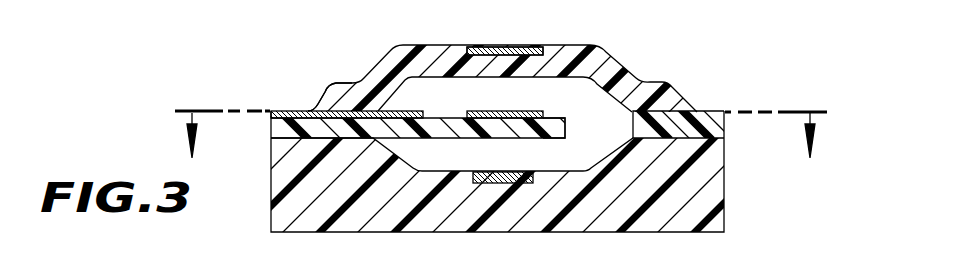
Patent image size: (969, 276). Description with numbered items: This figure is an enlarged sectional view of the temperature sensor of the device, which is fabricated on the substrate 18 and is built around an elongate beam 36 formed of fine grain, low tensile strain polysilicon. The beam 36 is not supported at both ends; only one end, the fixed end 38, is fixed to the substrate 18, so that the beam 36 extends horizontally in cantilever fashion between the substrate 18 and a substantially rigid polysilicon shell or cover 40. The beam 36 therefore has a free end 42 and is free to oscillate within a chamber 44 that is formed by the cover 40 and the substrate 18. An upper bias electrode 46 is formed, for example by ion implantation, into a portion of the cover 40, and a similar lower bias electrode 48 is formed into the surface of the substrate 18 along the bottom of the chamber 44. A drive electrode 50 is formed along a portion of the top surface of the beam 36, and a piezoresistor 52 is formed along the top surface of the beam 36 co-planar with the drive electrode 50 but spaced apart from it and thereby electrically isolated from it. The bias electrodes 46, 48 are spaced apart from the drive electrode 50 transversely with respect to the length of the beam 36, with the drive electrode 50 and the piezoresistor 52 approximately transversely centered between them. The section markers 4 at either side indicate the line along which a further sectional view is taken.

The section line 4- 4 is at (501, 111).
The substrate 18 is at (683, 222).
The elongate beam 36 is at (522, 133).
The fixed end of beam 38 is at (340, 127).
The shell or cover 40 is at (617, 68).
The free end 42 is at (555, 127).
The chamber 44 is at (432, 90).
The upper bias electrode 46 is at (513, 49).
The lower bias electrode 48 is at (499, 171).
The drive electrode 50 is at (515, 112).
The piezoresistor 52 is at (283, 110).